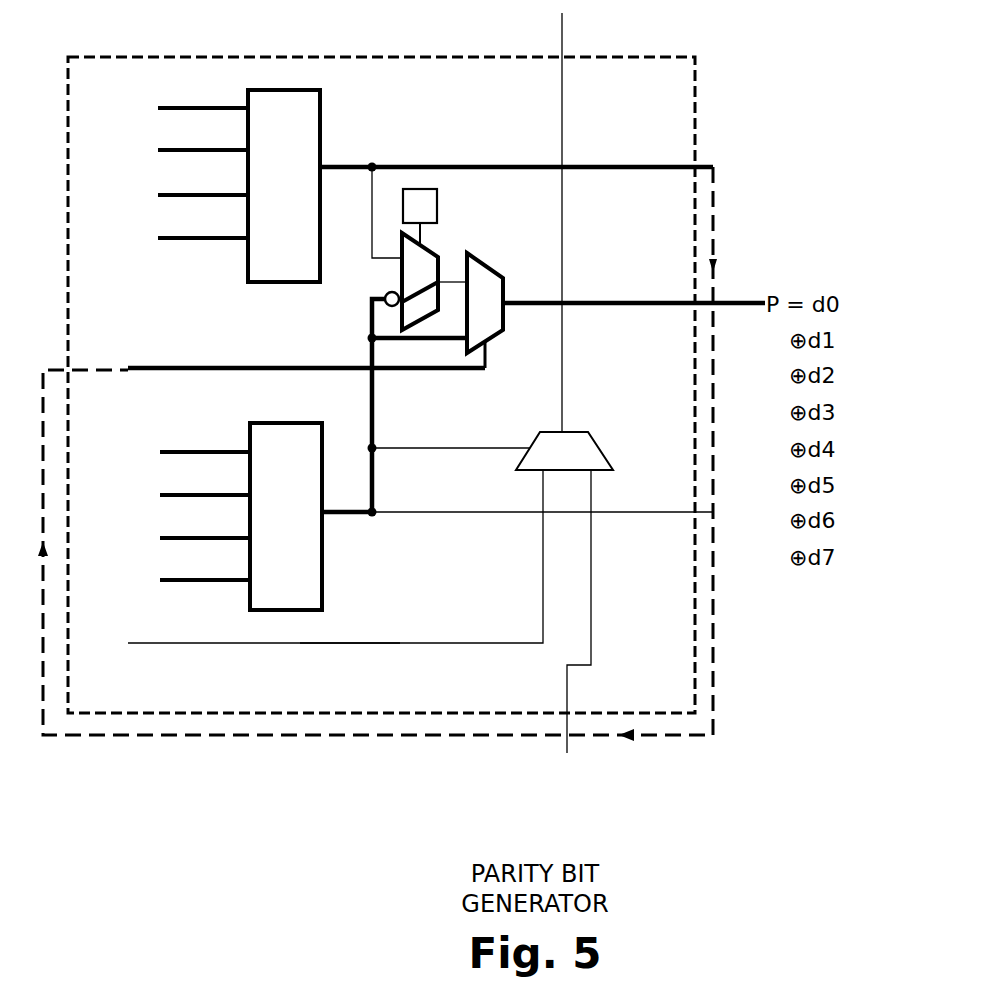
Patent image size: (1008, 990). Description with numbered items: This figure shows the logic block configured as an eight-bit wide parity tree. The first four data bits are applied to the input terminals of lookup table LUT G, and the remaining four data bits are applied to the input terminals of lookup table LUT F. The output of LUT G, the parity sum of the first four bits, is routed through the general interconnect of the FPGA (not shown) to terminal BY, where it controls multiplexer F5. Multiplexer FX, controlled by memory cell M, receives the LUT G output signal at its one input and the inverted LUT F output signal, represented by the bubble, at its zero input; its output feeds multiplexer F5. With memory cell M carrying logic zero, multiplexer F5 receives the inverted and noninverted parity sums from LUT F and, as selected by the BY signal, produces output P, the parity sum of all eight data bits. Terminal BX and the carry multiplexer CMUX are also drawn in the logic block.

The lookup table G LUT G is at (322, 137).
The lookup table F LUT F is at (292, 423).
The memory cell M is at (420, 217).
The multiplexer FX is at (402, 282).
The multiplexer F5 is at (480, 263).
The carry multiplexer CMUX is at (401, 587).
The terminal BX is at (306, 629).
The terminal BY is at (306, 354).